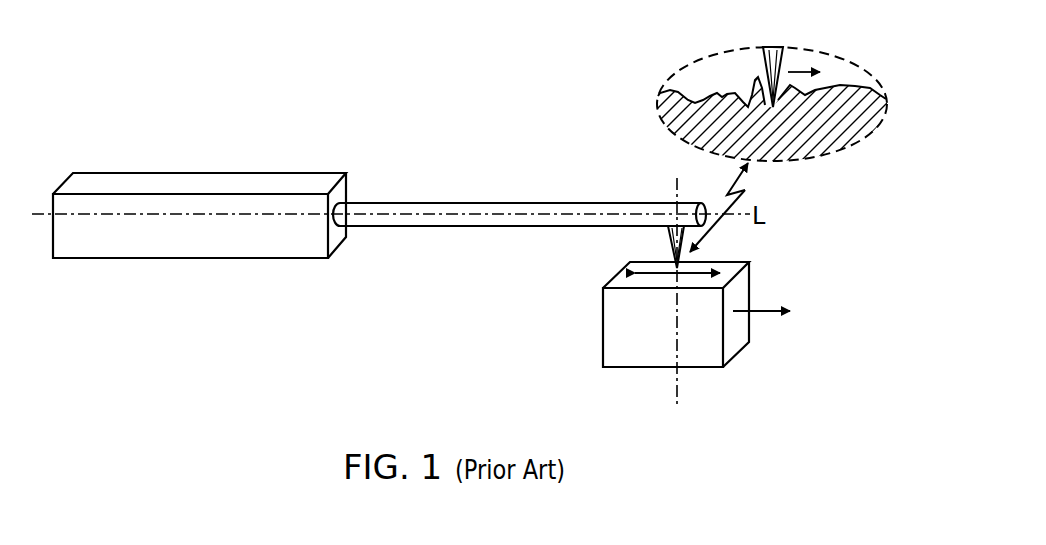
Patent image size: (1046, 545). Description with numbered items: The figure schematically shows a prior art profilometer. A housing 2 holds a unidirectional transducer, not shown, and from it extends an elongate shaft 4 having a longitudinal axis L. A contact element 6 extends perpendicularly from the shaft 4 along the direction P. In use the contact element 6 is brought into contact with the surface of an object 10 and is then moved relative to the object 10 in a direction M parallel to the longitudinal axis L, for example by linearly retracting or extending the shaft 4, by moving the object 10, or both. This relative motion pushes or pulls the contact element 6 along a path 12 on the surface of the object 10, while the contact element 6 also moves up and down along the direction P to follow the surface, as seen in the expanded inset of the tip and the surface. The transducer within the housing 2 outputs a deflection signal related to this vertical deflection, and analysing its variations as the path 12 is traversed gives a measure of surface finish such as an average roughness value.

The housing 2 is at (227, 187).
The shaft 4 is at (455, 202).
The contact element 6 is at (667, 229).
The object 10 is at (745, 348).
The path 12 is at (700, 265).
The longitudinal axis L is at (719, 207).
The direction M is at (790, 192).
The direction P is at (676, 305).